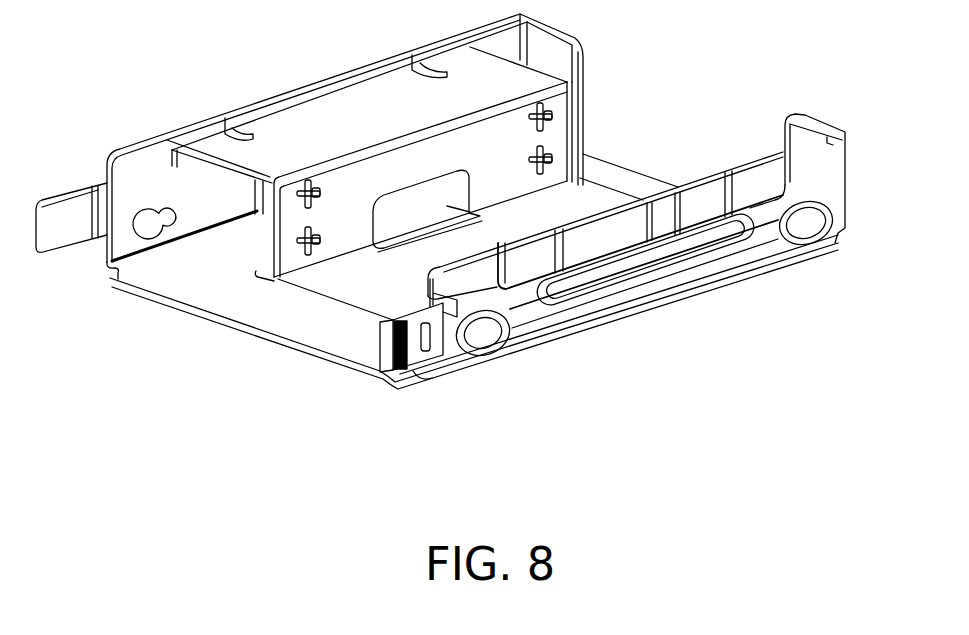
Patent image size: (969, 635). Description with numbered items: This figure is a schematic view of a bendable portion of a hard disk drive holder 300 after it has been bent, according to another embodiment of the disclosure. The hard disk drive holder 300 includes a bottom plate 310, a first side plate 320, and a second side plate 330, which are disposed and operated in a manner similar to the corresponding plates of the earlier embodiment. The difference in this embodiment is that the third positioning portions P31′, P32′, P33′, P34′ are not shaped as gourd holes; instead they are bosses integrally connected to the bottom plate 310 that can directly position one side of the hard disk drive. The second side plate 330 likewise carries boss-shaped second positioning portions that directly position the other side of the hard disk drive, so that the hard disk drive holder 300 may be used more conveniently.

The hard disk drive holder 300 is at (792, 476).
The bottom plate 310 is at (273, 357).
The first side plate 320 is at (140, 177).
The second side plate 330 is at (823, 167).
The third positioning portion P32′ is at (320, 194).
The third positioning portion P34′ is at (322, 244).
The third positioning portion P33′ is at (554, 117).
The third positioning portion P31′ is at (554, 161).